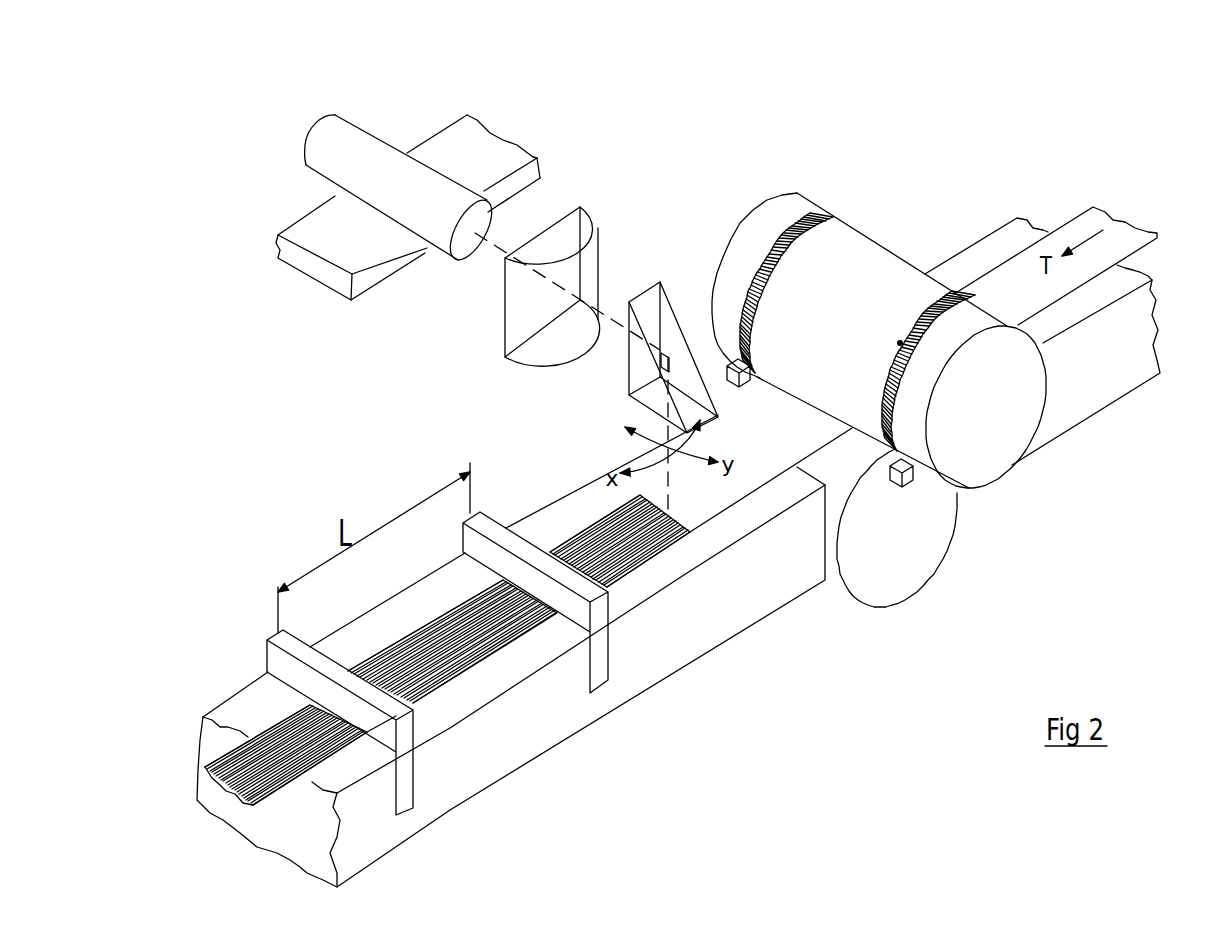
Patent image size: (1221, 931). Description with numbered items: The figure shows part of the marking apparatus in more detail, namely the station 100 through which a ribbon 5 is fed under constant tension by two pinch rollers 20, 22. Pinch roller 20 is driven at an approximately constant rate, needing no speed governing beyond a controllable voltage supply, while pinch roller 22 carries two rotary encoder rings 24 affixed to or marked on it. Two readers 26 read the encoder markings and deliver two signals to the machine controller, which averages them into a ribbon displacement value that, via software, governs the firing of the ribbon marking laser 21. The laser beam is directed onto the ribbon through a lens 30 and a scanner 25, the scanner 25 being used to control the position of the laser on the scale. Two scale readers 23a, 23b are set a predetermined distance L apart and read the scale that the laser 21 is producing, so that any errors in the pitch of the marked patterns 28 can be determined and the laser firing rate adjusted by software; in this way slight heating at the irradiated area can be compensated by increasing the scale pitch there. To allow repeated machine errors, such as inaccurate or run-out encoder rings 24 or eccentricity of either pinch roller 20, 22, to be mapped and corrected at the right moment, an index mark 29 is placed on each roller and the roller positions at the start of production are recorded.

The support bar / workpiece 5 is at (512, 152).
The pinch roller 20 is at (882, 575).
The ribbon marking laser 21 is at (360, 195).
The pinch roller 22 is at (1003, 430).
The scale reader 23a is at (553, 593).
The scale reader 23b is at (343, 707).
The rotary encoder rings 24 is at (827, 220).
The scanner 25 is at (640, 372).
The readers 26 is at (730, 367).
The patterns 28 is at (618, 550).
The index mark 29 is at (900, 343).
The lens 30 is at (574, 228).
The station 100 is at (288, 383).